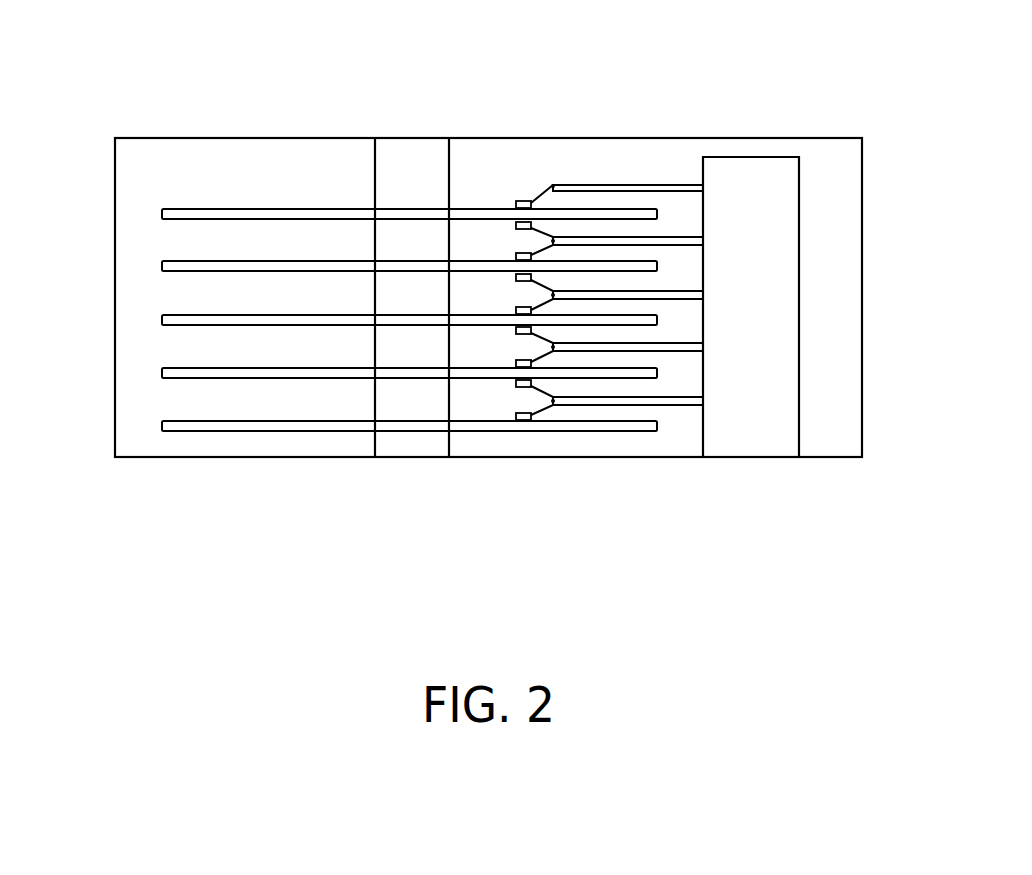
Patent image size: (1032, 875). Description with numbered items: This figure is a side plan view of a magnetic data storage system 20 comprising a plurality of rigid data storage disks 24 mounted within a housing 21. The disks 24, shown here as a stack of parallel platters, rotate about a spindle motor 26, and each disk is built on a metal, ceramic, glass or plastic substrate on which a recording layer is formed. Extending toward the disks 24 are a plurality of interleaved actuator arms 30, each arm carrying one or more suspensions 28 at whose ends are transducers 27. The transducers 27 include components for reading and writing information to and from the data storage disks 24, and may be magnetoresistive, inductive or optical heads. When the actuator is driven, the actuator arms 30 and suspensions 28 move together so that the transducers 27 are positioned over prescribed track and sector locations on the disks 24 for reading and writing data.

The magnetic data storage system 20 is at (760, 108).
The housing 21 is at (862, 340).
The rigid data storage disks 24 is at (162, 213).
The spindle motor 26 is at (403, 454).
The transducers 27 is at (515, 204).
The suspensions 28 is at (610, 183).
The actuator arms 30 is at (750, 432).